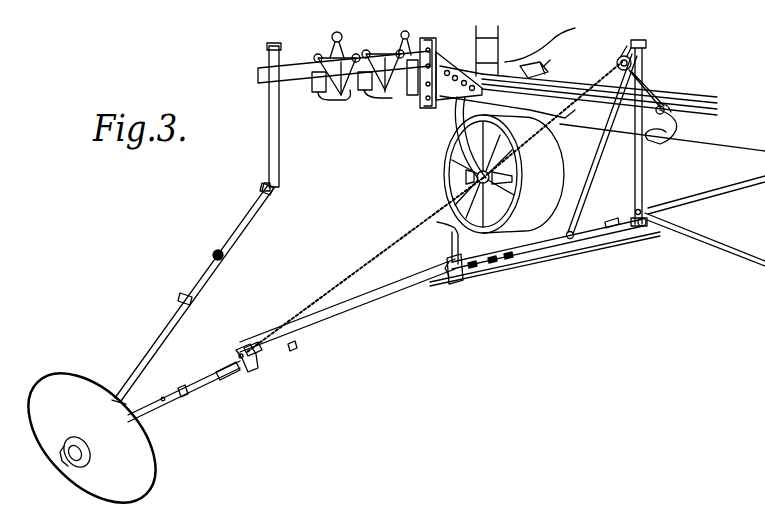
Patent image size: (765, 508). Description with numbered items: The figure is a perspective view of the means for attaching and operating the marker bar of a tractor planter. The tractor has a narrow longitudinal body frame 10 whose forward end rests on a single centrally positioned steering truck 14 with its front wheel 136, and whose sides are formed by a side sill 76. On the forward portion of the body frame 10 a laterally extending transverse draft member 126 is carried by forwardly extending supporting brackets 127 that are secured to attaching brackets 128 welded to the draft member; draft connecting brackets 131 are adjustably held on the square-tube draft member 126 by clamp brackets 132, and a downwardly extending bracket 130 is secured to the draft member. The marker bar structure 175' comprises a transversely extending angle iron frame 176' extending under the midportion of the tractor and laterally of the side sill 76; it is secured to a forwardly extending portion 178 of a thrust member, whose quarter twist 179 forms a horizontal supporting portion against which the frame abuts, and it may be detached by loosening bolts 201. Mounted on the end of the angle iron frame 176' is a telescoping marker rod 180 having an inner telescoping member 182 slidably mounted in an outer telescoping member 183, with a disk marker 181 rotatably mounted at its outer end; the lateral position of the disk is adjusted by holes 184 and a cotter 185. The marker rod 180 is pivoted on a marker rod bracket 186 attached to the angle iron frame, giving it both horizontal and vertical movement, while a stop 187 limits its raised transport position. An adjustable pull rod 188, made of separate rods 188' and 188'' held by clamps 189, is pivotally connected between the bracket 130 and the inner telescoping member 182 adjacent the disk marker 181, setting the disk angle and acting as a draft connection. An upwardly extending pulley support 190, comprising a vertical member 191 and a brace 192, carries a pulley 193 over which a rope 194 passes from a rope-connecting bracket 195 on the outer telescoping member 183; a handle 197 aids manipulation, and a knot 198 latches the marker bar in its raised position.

The body frame 10 is at (556, 92).
The steering truck 14 is at (457, 148).
The side sill 76 is at (706, 143).
The transverse draft member 126 is at (297, 74).
The supporting brackets 127 is at (437, 98).
The attaching brackets 128 is at (413, 74).
The bracket 130 is at (256, 75).
The draft connecting brackets 131 is at (340, 94).
The clamp brackets 132 is at (369, 50).
The front wheel 136 is at (453, 186).
The marker bar structure 175' is at (547, 265).
The angle iron frame 176' is at (545, 259).
The forwardly extending portion 178 is at (690, 232).
The quarter twist 179 is at (646, 228).
The telescoping marker rod 180 is at (294, 349).
The disk marker 181 is at (138, 460).
The inner telescoping member 182 is at (195, 393).
The outer telescoping member 183 is at (355, 309).
The holes 184 is at (182, 388).
The cotter 185 is at (241, 354).
The marker rod bracket 186 is at (454, 279).
The stop 187 is at (460, 250).
The adjustable pull rod 188 is at (194, 293).
The rod 188' is at (120, 375).
The rod 188'' is at (280, 206).
The clamps 189 is at (185, 293).
The pulley support 190 is at (647, 63).
The vertical member 191 is at (646, 190).
The brace 192 is at (604, 174).
The pulley 193 is at (619, 58).
The rope 194 is at (341, 280).
The rope-connecting bracket 195 is at (258, 366).
The handle 197 is at (680, 136).
The knot 198 is at (676, 103).
The bolts 201 is at (706, 193).